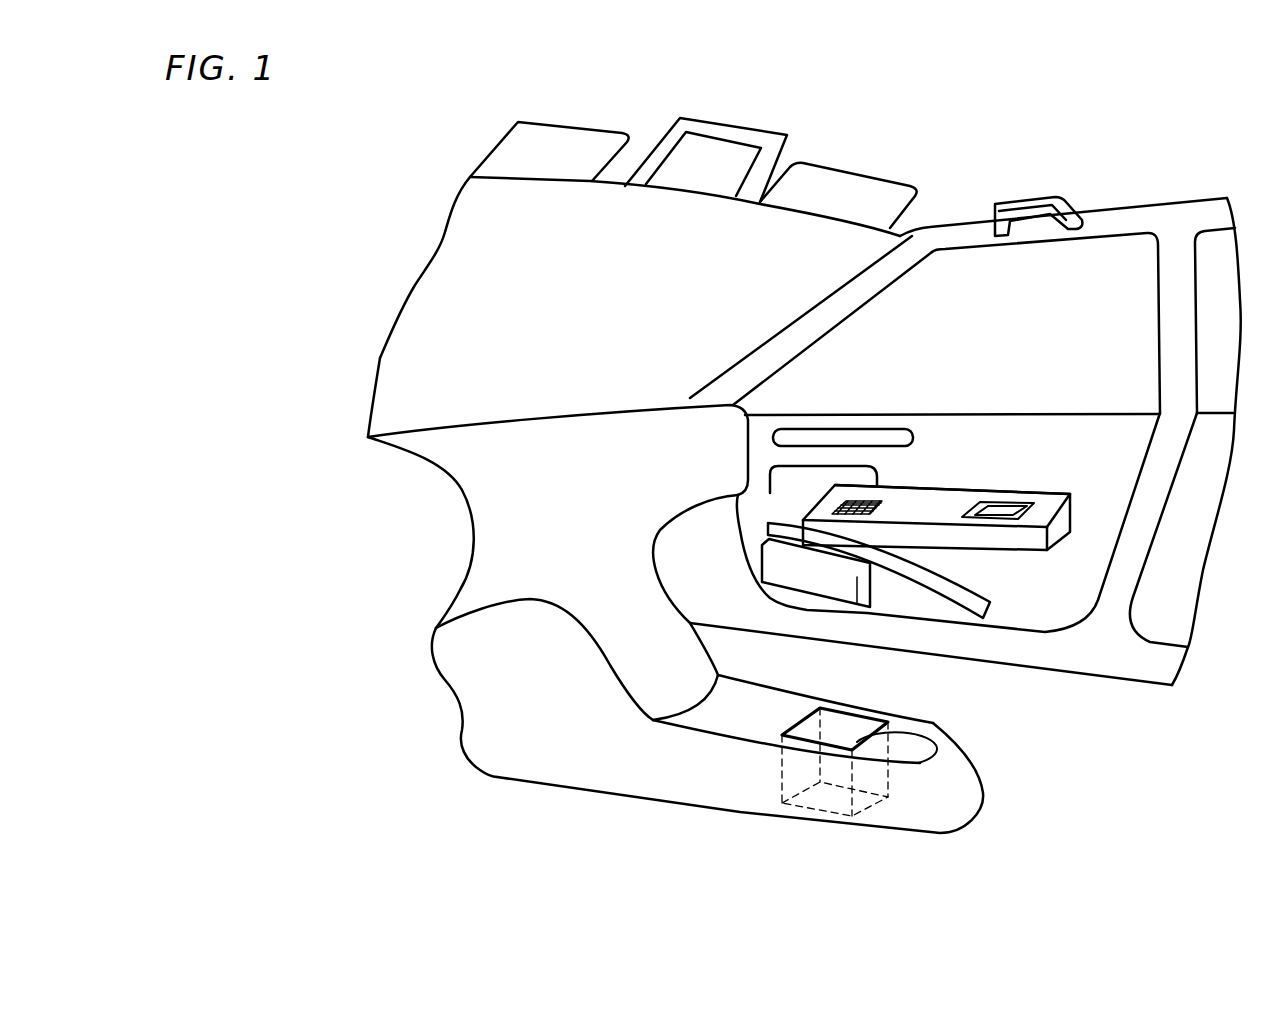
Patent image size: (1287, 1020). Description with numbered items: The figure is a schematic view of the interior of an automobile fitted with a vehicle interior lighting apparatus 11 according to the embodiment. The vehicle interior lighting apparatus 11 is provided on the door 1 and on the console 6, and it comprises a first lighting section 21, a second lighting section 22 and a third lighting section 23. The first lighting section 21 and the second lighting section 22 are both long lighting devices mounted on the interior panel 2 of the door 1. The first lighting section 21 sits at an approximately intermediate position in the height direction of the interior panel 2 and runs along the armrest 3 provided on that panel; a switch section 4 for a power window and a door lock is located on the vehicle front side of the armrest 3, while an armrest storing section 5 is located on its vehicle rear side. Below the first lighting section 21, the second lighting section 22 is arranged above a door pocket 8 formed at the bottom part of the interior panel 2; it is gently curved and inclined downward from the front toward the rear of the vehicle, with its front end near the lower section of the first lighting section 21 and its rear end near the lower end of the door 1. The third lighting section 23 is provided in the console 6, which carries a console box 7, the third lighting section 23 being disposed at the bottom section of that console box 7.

The door 1 is at (1090, 610).
The interior panel 2 is at (1078, 440).
The armrest 3 is at (1020, 553).
The switch section 4 is at (855, 502).
The armrest storing section 5 is at (995, 515).
The console 6 is at (853, 703).
The console box 7 is at (905, 733).
The door pocket 8 is at (813, 553).
The vehicle interior lighting apparatus 11 is at (1062, 727).
The first lighting section 21 is at (967, 478).
The second lighting section 22 is at (948, 605).
The third lighting section 23 is at (817, 822).